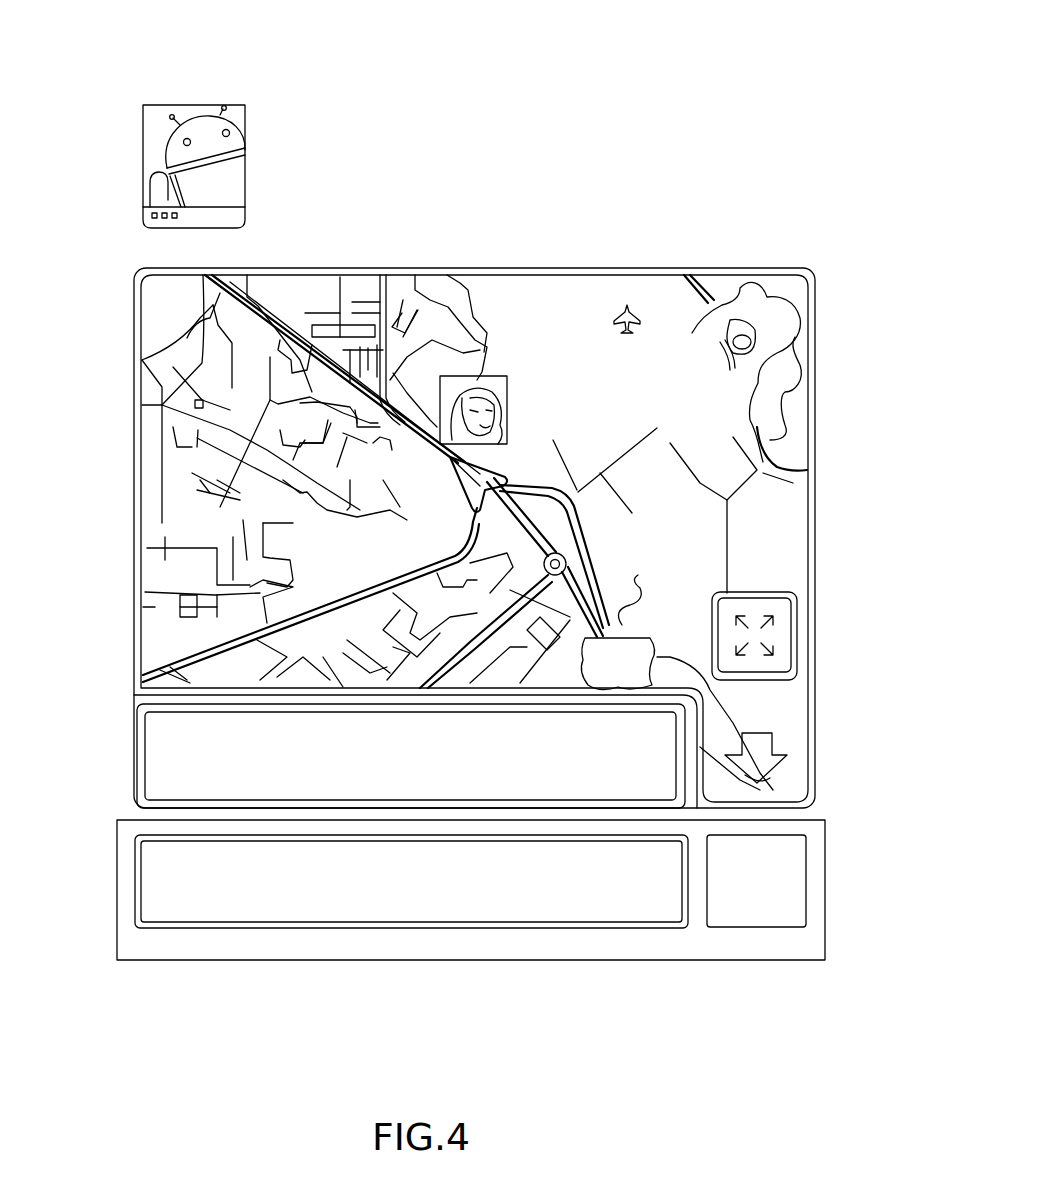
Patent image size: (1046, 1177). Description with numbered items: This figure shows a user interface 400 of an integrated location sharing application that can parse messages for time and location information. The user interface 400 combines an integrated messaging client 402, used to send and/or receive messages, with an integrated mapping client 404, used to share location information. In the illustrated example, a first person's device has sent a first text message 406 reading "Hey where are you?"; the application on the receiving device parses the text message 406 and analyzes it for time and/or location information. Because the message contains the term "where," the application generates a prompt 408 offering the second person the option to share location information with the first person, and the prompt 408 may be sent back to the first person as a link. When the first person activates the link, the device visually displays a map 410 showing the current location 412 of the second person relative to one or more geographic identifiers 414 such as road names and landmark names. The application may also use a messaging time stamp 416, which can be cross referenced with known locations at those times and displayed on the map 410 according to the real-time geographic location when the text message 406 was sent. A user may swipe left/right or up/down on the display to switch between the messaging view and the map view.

The user interface 400 is at (730, 46).
The integrated messaging client 402 is at (143, 204).
The integrated mapping client 404 is at (134, 520).
The first text message 406 is at (712, 142).
The prompt 408 is at (136, 770).
The map 410 is at (833, 273).
The current location 412 is at (462, 490).
The geographic identifiers 414 is at (818, 806).
The messaging time stamp 416 is at (447, 196).